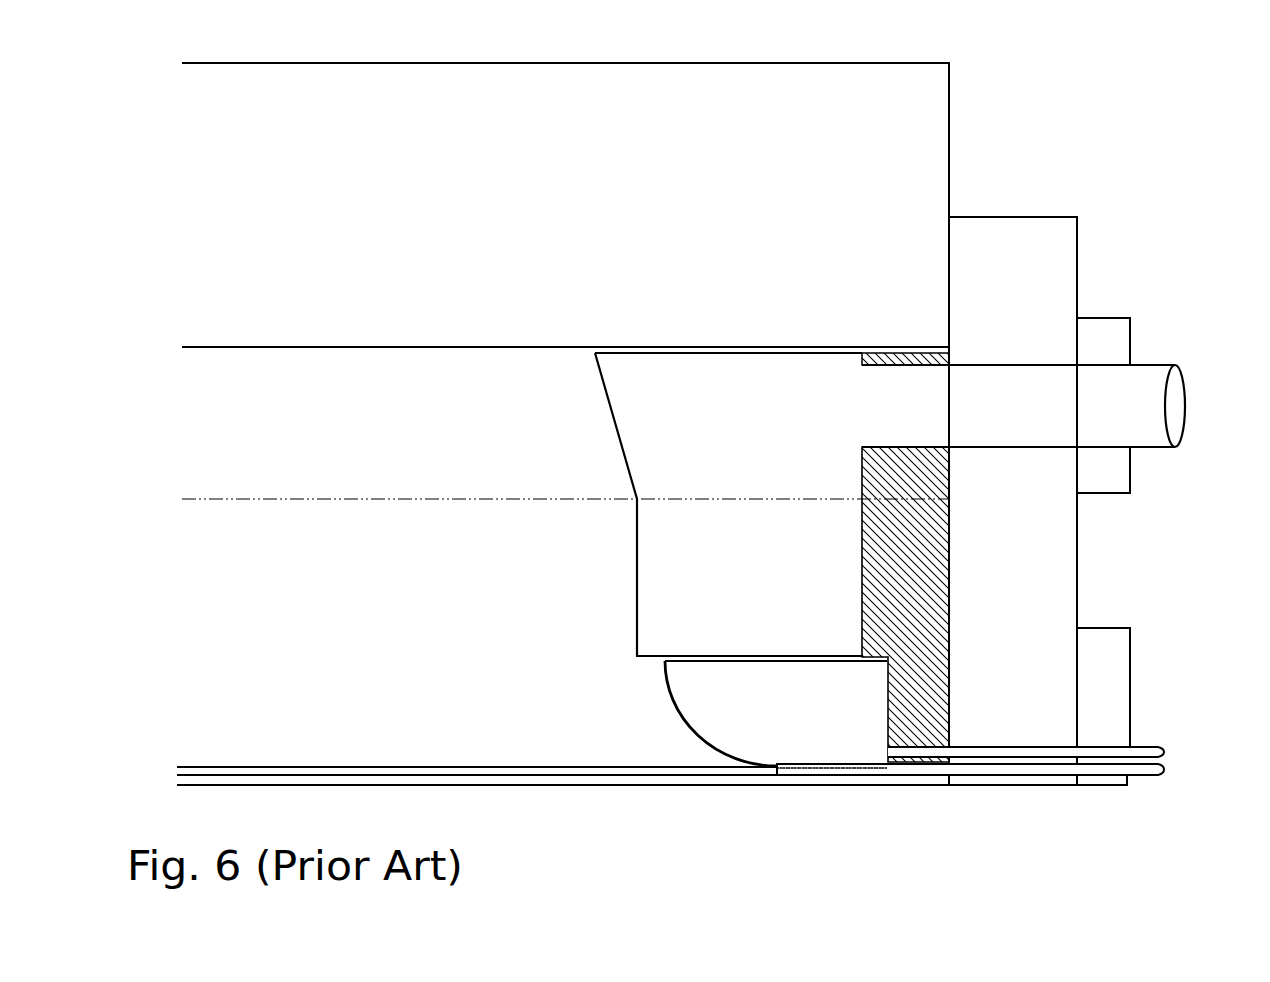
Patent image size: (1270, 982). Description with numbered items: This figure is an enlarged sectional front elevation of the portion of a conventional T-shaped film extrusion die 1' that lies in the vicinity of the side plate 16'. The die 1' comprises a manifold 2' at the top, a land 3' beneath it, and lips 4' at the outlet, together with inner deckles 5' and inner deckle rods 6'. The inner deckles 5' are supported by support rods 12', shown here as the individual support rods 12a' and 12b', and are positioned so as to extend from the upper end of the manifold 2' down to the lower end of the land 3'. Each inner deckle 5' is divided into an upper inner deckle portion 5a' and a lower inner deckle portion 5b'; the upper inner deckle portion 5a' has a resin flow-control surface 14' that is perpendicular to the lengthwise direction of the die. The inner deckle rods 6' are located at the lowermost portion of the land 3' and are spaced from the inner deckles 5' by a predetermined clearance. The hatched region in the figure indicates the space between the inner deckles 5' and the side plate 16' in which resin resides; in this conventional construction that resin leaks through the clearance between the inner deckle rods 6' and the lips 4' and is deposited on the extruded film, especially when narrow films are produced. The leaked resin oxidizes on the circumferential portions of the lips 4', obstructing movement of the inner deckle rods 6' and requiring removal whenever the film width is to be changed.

The T-shaped film extrusion die 1' is at (638, 424).
The manifold 2' is at (450, 411).
The land 3' is at (132, 549).
The lips 4' is at (577, 780).
The inner deckles 5' is at (720, 726).
The upper inner deckle portion 5a' is at (742, 712).
The lower inner deckle portion 5b' is at (742, 790).
The inner deckle rods 6' is at (1038, 805).
The support rods 12' is at (1060, 522).
The support rod 12a' is at (1044, 587).
The support rod 12b' is at (989, 712).
The resin flow-control surface 14' is at (687, 594).
The side plate 16' is at (1078, 491).